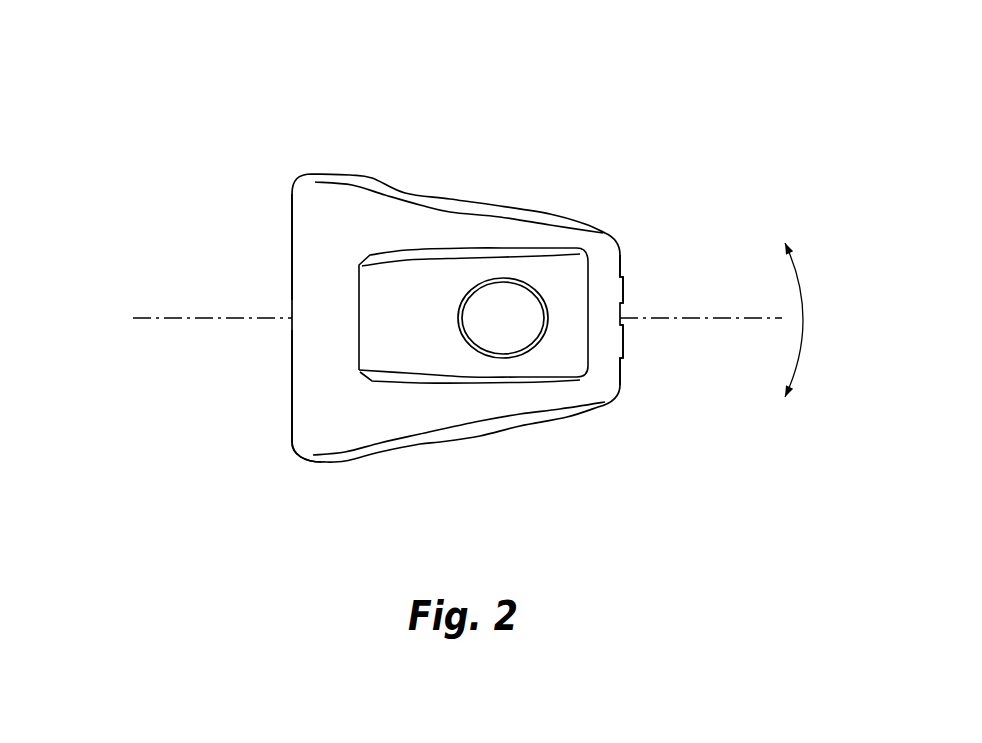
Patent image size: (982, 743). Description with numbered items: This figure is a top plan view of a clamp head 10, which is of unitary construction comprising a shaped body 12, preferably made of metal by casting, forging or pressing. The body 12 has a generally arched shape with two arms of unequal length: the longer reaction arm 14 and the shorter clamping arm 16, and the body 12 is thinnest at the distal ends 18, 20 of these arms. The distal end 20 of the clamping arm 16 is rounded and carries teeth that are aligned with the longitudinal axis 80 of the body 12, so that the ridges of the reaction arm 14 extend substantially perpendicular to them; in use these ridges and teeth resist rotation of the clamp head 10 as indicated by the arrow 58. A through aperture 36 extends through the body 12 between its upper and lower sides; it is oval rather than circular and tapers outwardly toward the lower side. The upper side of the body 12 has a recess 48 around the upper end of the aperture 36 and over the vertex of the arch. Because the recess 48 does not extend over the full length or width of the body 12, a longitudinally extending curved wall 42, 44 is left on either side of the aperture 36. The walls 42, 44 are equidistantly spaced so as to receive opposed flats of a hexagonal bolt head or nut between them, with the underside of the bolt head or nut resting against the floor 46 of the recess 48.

The clamp head 10 is at (619, 104).
The body 12 is at (368, 177).
The reaction arm 14 is at (315, 376).
The clamping arm 16 is at (612, 293).
The distal end of the reaction arm 18 is at (293, 243).
The distal end of the clamping arm 20 is at (625, 337).
The through aperture 36 is at (527, 307).
The curved wall 42 is at (504, 408).
The curved wall 44 is at (468, 222).
The floor of the recess 46 is at (560, 268).
The recess 48 is at (421, 362).
The arrow 58 is at (802, 278).
The longitudinal axis 80 is at (172, 318).